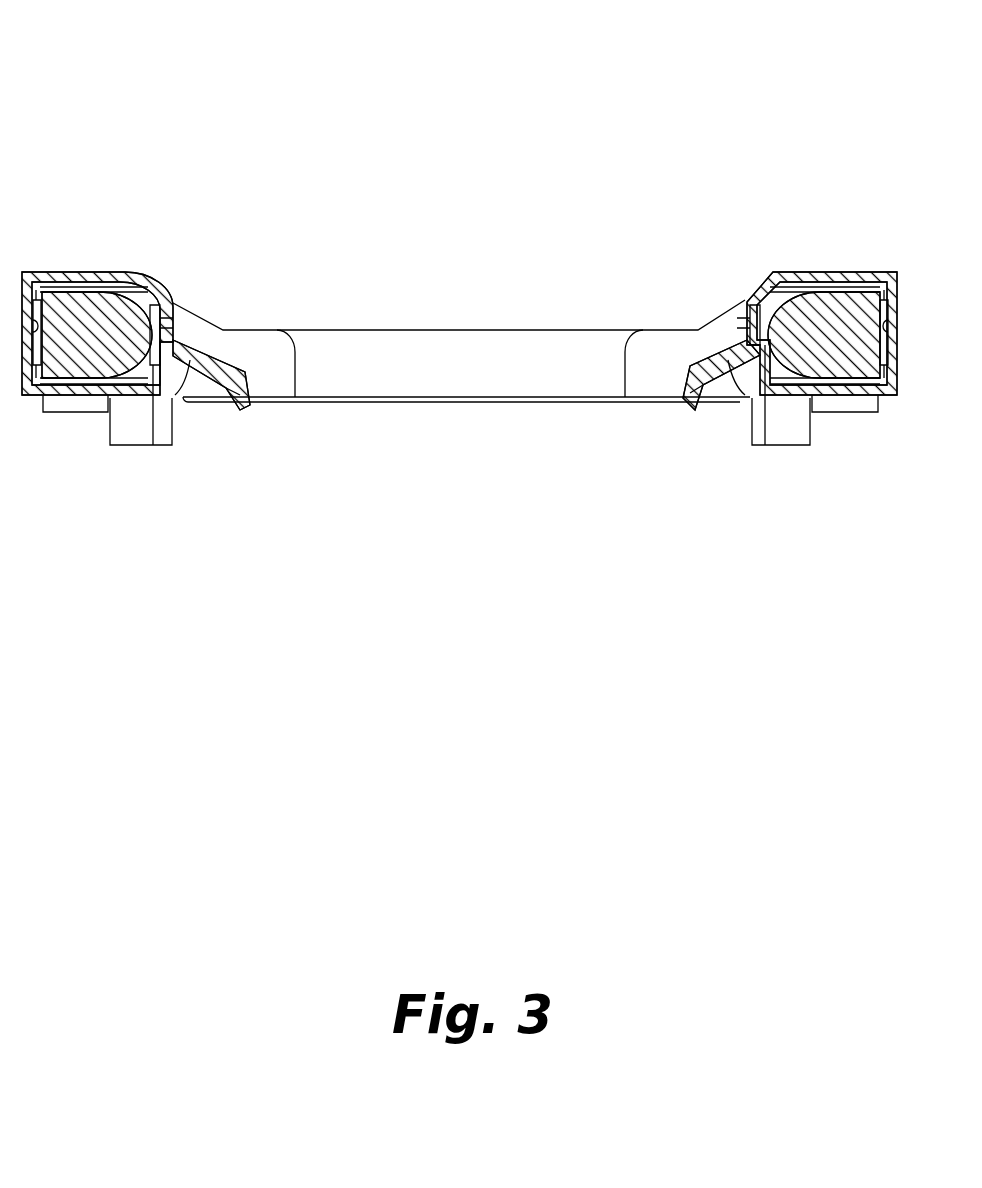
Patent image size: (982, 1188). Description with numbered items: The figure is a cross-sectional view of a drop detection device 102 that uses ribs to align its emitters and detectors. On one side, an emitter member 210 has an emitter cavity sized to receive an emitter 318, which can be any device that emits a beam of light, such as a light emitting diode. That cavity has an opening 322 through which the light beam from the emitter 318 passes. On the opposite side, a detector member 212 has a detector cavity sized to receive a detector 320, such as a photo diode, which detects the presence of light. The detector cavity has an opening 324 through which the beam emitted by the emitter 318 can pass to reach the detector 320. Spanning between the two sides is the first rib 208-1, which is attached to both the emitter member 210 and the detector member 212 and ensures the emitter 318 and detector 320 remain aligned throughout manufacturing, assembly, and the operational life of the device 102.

The drop detection device 102 is at (220, 78).
The first rib 208-1 is at (489, 354).
The detector member 212 is at (167, 287).
The emitter member 210 is at (757, 283).
The opening 324 is at (172, 322).
The opening 322 is at (757, 322).
The detector 320 is at (83, 338).
The emitter 318 is at (857, 345).